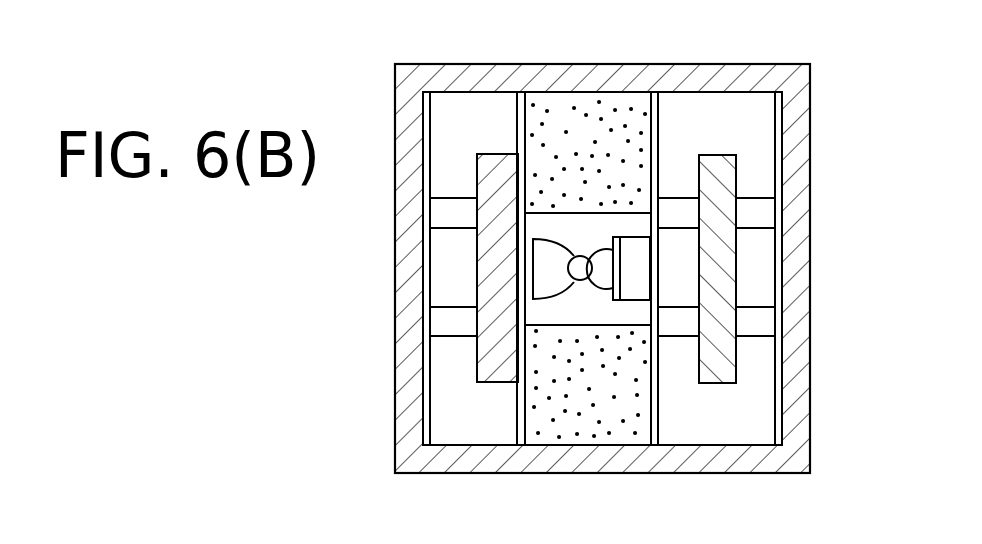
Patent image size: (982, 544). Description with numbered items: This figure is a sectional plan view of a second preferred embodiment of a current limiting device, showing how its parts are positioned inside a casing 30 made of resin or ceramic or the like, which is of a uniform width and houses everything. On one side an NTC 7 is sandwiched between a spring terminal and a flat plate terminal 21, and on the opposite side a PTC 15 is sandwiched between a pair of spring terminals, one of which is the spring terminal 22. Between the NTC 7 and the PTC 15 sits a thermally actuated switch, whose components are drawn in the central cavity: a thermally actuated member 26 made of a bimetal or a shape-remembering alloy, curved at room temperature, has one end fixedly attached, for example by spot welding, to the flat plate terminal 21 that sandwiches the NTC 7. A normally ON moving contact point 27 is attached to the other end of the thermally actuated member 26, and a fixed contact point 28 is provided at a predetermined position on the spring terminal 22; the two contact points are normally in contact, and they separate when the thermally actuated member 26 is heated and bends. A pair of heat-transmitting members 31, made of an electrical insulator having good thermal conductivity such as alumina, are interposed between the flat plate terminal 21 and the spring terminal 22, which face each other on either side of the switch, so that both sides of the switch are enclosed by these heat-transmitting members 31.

The NTC 7 is at (487, 277).
The PTC 15 is at (730, 265).
The flat plate terminal 21 is at (517, 108).
The spring terminal 22 is at (663, 108).
The thermally actuated member 26 is at (547, 250).
The moving contact point 27 is at (580, 288).
The fixed contact point 28 is at (604, 289).
The casing 30 is at (810, 373).
The heat-transmitting members 31 is at (618, 108).